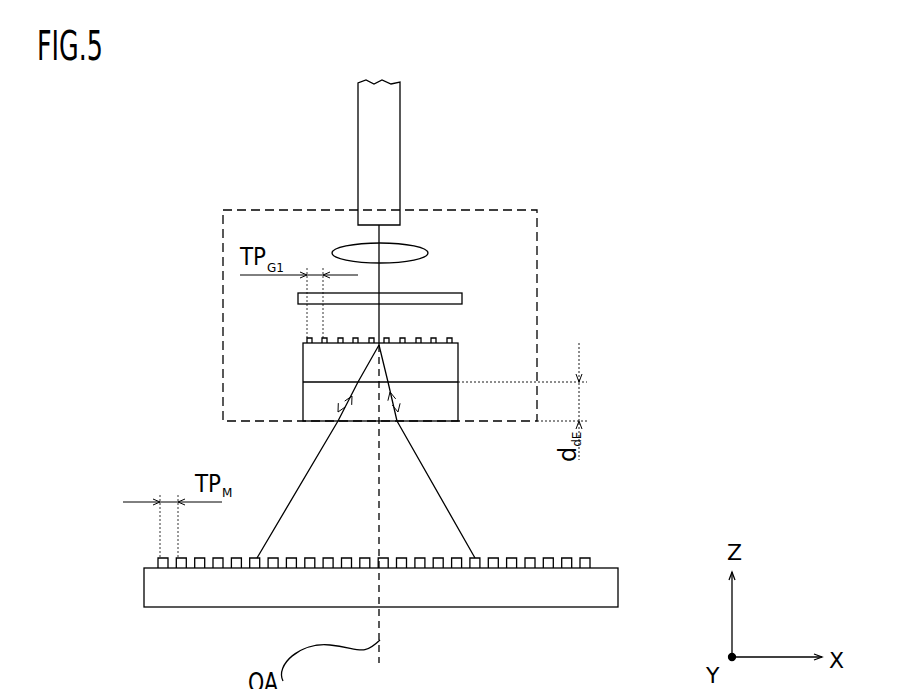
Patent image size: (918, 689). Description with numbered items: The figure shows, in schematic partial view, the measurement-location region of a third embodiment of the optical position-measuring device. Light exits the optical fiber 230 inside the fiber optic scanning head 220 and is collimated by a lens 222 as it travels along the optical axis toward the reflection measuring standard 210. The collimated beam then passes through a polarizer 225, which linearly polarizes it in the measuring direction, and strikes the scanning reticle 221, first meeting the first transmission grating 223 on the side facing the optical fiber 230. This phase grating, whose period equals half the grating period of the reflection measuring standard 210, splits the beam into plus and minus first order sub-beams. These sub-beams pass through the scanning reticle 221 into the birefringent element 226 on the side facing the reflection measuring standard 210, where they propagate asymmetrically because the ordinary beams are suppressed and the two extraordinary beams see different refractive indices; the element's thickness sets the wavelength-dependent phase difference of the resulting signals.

The reflection measuring standard 210 is at (572, 556).
The fiber optic scanning head 220 is at (530, 209).
The scanning reticle 221 is at (447, 366).
The lens 222 is at (428, 255).
The first transmission grating 223 is at (454, 340).
The polarizer 225 is at (463, 297).
The birefringent element 226 is at (440, 404).
The optical fiber 230 is at (389, 151).